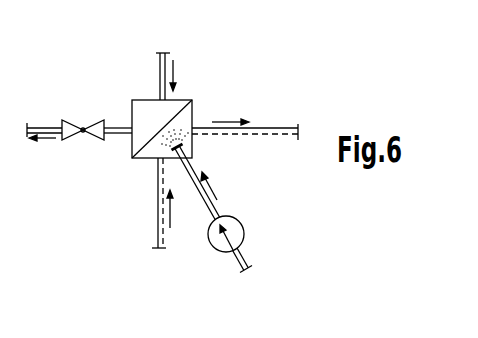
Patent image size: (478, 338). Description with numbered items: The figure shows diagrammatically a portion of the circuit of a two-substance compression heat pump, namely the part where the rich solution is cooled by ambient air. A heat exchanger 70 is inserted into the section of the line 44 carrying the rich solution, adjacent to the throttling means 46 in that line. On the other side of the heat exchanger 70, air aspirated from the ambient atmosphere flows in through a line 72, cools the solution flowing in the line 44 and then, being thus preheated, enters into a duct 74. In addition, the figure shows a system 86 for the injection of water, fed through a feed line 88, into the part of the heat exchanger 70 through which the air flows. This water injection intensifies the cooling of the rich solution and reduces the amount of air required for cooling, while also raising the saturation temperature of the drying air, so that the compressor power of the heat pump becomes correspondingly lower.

The line 44 is at (118, 135).
The throttling means 46 is at (83, 134).
The heat exchanger 70 is at (197, 102).
The line 72 is at (158, 197).
The duct 74 is at (266, 127).
The system for the injection of water 86 is at (183, 146).
The feed line 88 is at (216, 209).